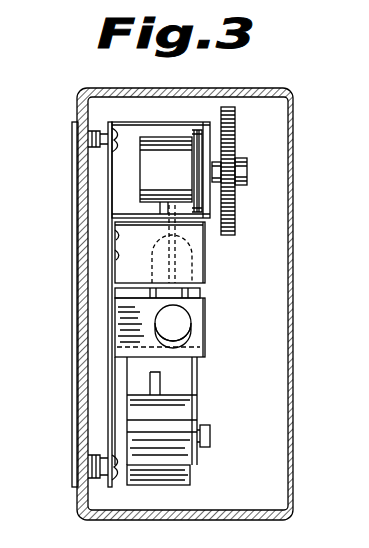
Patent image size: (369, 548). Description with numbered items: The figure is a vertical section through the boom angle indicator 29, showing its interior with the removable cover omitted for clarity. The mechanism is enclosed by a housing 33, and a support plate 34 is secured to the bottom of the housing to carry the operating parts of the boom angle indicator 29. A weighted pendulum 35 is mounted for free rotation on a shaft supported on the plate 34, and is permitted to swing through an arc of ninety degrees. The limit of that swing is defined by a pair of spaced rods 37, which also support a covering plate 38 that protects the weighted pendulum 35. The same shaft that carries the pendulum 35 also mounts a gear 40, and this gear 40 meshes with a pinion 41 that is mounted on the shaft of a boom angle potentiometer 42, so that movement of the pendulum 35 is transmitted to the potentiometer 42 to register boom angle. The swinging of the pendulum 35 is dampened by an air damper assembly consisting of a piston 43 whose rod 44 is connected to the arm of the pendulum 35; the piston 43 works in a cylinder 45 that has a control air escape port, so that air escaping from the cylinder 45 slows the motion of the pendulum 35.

The boom angle indicator 29 is at (308, 91).
The housing 33 is at (80, 91).
The support plate 34 is at (110, 198).
The pendulum 35 is at (192, 480).
The spaced rods 37 is at (212, 432).
The covering plate 38 is at (205, 372).
The gear 40 is at (236, 138).
The pinion 41 is at (248, 172).
The boom angle potentiometer 42 is at (168, 180).
The piston 43 is at (205, 277).
The rod 44 is at (178, 213).
The cylinder 45 is at (205, 258).